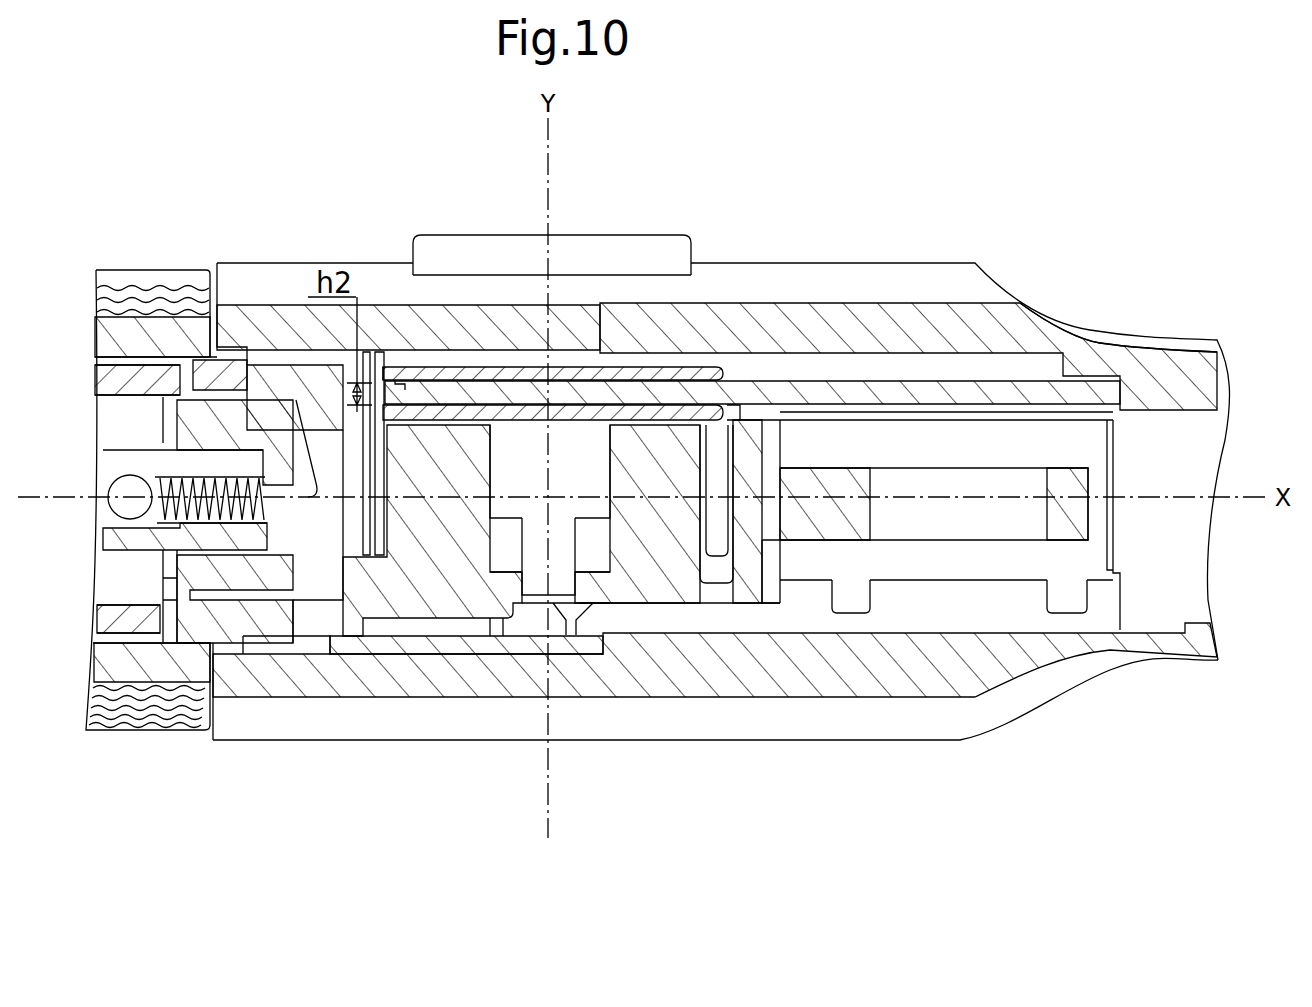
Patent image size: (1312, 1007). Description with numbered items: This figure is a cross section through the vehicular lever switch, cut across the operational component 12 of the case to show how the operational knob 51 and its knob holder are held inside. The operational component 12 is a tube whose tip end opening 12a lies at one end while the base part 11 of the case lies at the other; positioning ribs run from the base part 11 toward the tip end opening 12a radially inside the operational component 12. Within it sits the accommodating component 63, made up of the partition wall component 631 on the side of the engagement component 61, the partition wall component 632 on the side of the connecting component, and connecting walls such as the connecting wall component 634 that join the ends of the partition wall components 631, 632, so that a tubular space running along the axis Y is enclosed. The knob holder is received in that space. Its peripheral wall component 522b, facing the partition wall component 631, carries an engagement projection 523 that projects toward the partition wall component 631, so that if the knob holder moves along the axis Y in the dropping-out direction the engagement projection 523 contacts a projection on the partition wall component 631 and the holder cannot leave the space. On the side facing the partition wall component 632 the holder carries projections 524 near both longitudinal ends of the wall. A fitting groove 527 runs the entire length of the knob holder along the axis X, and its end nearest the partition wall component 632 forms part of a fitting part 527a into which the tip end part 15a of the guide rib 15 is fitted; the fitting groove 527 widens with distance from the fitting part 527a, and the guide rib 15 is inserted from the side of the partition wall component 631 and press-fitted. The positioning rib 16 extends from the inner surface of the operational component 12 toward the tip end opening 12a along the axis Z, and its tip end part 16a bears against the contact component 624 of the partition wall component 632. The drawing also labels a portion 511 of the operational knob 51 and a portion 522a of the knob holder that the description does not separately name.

The base part 11 is at (1172, 377).
The operational component 12 is at (858, 335).
The tip end opening 12a is at (222, 350).
The guide rib 15 is at (500, 385).
The tip end part of the guide rib 15a is at (422, 393).
The positioning rib 16 is at (553, 645).
The tip end part of the positioning rib 16a is at (350, 645).
The operational knob 51 is at (683, 222).
The cover bottom wall 511 is at (640, 257).
The lower projection 522a is at (518, 513).
The peripheral wall component 522b is at (712, 484).
The engagement projection 523 is at (740, 438).
The projections 524 is at (372, 352).
The fitting groove 527 is at (585, 375).
The fitting part 527a is at (410, 372).
The engagement component 61 is at (812, 598).
The contact component 624 is at (320, 640).
The accommodating component 63 is at (685, 614).
The partition wall component 631 is at (747, 450).
The partition wall component 632 is at (318, 382).
The connecting wall component 634 is at (425, 522).